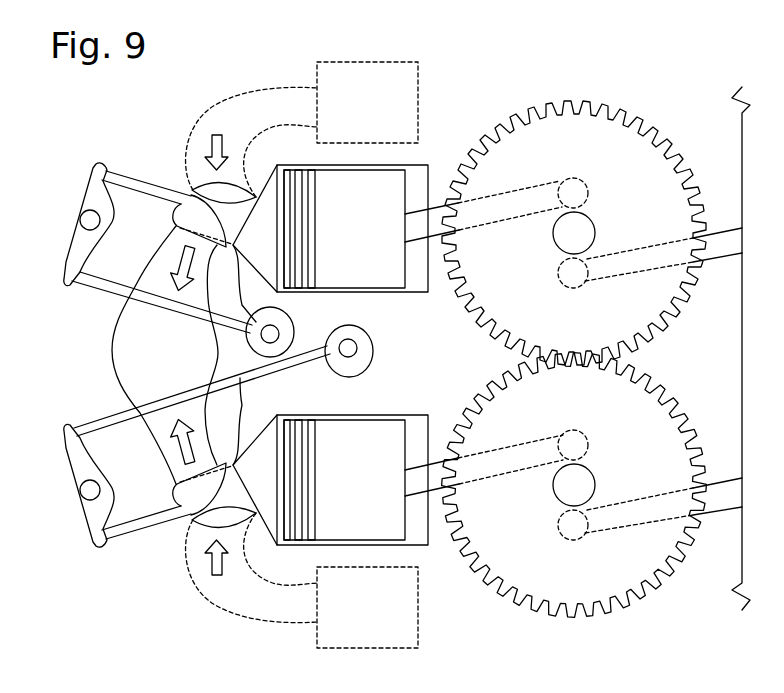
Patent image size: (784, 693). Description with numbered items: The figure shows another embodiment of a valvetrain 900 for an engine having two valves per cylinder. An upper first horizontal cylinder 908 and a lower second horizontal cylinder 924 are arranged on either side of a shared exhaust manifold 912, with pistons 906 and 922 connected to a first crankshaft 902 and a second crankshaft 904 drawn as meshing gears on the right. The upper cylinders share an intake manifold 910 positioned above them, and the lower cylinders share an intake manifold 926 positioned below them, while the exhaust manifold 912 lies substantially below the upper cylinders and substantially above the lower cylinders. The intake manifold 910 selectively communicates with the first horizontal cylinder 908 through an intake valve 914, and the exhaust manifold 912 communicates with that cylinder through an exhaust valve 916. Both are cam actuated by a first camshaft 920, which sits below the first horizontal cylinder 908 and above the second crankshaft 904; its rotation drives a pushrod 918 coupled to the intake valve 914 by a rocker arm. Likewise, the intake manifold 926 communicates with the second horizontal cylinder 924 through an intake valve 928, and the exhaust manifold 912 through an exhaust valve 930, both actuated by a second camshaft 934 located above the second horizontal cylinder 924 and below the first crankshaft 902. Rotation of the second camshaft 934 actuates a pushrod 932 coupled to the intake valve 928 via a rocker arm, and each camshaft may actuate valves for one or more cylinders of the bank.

The valvetrain 900 is at (639, 94).
The first crankshaft 902 is at (546, 169).
The second crankshaft 904 is at (548, 416).
The first piston 906 is at (373, 239).
The first horizontal cylinder 908 is at (253, 266).
The intake manifold 910 is at (293, 100).
The exhaust manifold 912 is at (182, 364).
The intake valve 914 is at (140, 157).
The exhaust valve 916 is at (140, 157).
The pushrod 918 is at (100, 288).
The first camshaft 920 is at (293, 324).
The second piston 922 is at (373, 490).
The second horizontal cylinder 924 is at (250, 443).
The intake manifold 926 is at (293, 610).
The intake valve 928 is at (135, 522).
The exhaust valve 930 is at (135, 522).
The pushrod 932 is at (95, 426).
The second camshaft 934 is at (373, 346).